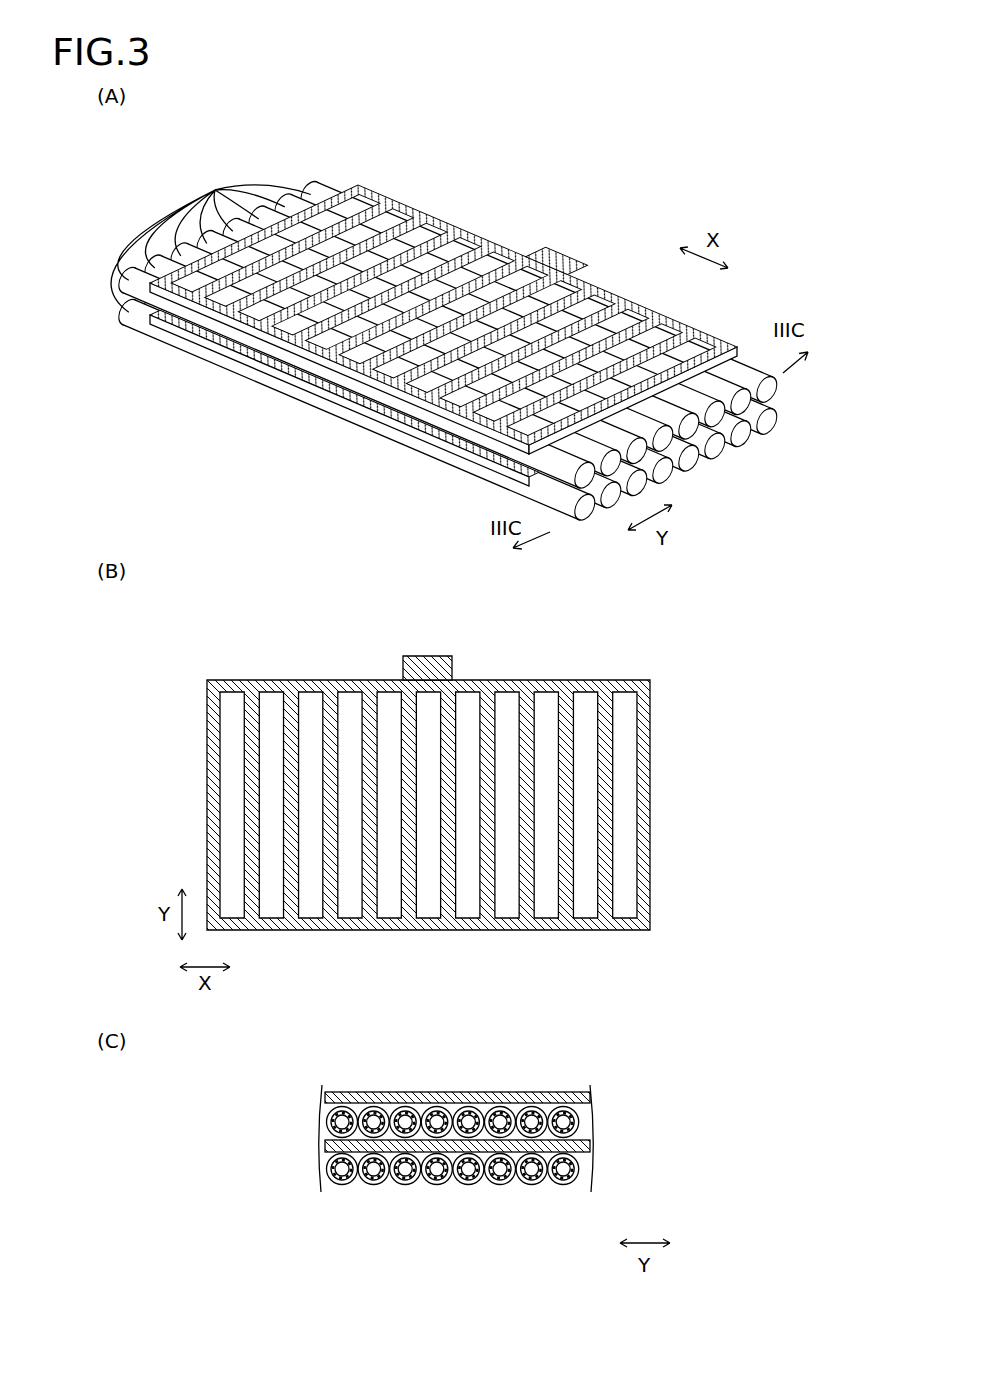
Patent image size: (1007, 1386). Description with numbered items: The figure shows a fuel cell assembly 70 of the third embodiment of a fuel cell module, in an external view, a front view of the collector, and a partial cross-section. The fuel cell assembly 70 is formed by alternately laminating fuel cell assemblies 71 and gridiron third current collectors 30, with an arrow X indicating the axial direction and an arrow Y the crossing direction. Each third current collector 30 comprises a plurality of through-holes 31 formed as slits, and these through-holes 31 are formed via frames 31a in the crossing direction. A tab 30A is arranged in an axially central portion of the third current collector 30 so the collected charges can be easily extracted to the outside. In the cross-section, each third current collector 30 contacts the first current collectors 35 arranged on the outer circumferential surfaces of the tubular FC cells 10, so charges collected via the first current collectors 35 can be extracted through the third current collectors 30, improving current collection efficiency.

The fuel cell assembly 70 is at (467, 123).
The tubular FC cell 10 is at (211, 238).
The third current collector 30 is at (428, 216).
The tab 30A is at (558, 252).
The through-hole 31 is at (267, 905).
The frame 31a is at (327, 730).
The fuel cell assembly 71 is at (742, 461).
The first current collector 35 is at (327, 1094).